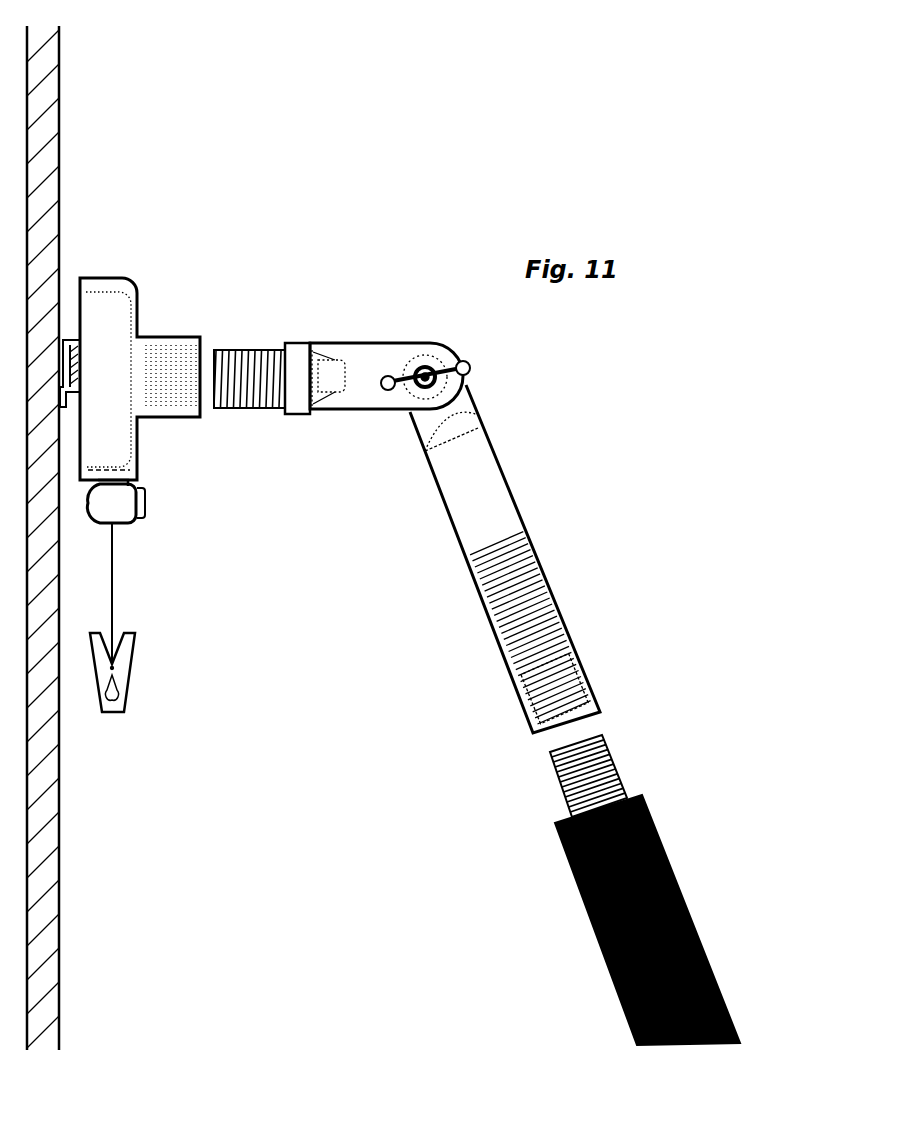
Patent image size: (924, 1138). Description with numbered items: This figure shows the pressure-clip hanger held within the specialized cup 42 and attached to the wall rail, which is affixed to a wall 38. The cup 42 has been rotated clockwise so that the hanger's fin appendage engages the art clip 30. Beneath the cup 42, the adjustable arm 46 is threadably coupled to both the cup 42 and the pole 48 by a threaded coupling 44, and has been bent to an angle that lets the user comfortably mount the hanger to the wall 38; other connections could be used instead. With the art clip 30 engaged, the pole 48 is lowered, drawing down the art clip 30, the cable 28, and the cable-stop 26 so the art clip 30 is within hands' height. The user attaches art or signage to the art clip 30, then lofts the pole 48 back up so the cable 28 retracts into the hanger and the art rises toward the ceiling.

The wall 38 is at (62, 118).
The cup 42 is at (140, 283).
The threaded coupling body 44 is at (342, 378).
The adjustable arm 46 is at (512, 489).
The pole 48 is at (655, 826).
The cable-stop 26 is at (150, 503).
The cable 28 is at (116, 571).
The art clip 30 is at (133, 675).